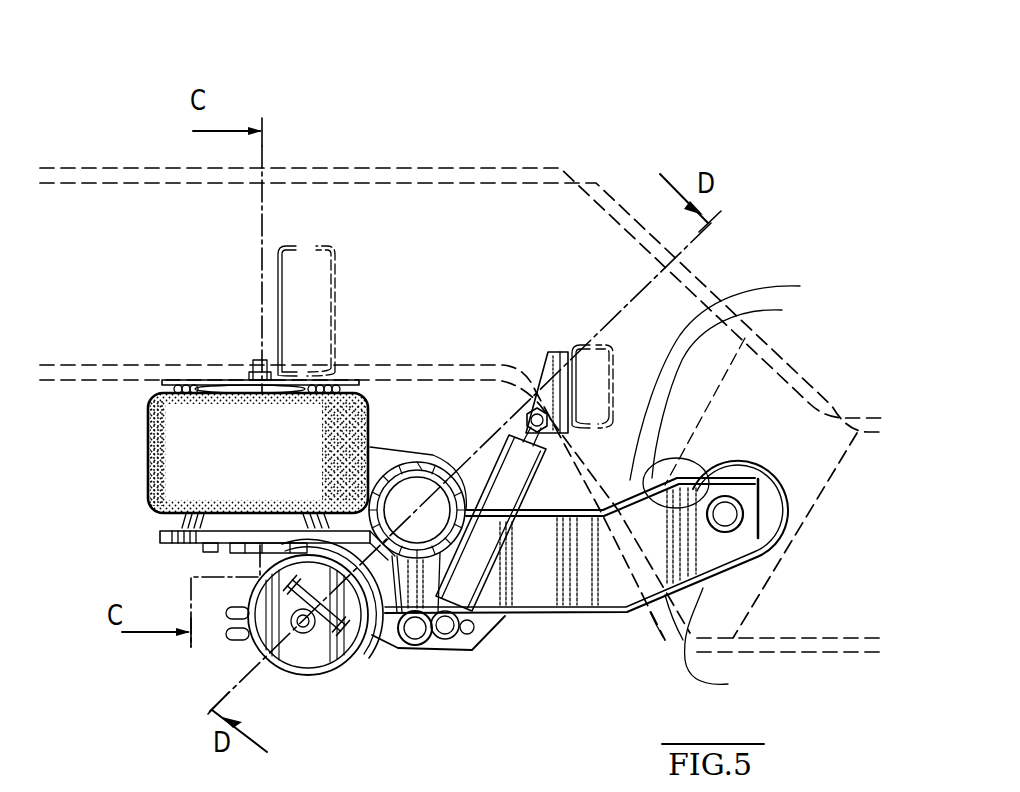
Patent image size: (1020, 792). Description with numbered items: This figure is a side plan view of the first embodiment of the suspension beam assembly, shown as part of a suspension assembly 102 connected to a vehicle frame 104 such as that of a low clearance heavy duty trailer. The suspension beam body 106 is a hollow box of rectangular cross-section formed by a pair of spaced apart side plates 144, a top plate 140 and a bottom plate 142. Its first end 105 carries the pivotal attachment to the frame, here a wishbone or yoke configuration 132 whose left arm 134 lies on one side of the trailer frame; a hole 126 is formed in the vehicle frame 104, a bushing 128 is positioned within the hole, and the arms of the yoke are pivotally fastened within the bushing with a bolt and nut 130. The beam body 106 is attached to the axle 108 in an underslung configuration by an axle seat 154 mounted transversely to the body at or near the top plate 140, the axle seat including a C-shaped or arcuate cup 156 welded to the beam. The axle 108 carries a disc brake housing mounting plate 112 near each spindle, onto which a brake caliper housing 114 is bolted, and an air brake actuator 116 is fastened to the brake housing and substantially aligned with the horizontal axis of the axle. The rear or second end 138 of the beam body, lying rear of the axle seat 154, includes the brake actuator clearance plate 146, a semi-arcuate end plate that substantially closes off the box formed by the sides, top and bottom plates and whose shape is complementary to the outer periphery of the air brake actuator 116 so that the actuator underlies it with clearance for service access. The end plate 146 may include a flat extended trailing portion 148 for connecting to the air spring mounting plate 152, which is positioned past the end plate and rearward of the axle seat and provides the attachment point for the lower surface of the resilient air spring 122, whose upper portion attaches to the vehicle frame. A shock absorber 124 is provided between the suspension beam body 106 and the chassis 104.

The suspension assembly 102 is at (415, 678).
The vehicle frame 104 is at (570, 165).
The first end 105 is at (747, 540).
The suspension beam body 106 is at (632, 608).
The axle 108 is at (503, 617).
The disc brake housing mounting plate 112 is at (512, 420).
The brake caliper housing 114 is at (392, 660).
The air brake actuator 116 is at (272, 652).
The air spring 122 is at (160, 418).
The shock absorber 124 is at (524, 426).
The hole 126 is at (735, 389).
The bushing 128 is at (710, 477).
The bolt and nut 130 is at (735, 500).
The yoke configuration 132 is at (726, 645).
The left arm 134 is at (734, 375).
The second end 138 is at (190, 566).
The top plate 140 is at (495, 436).
The bottom plate 142 is at (535, 615).
The side plates 144 is at (542, 580).
The brake actuator clearance plate 146 is at (366, 656).
The flat extended trailing portion 148 is at (400, 560).
The air spring mounting plate 152 is at (196, 543).
The axle seat 154 is at (432, 652).
The arcuate cup 156 is at (385, 648).